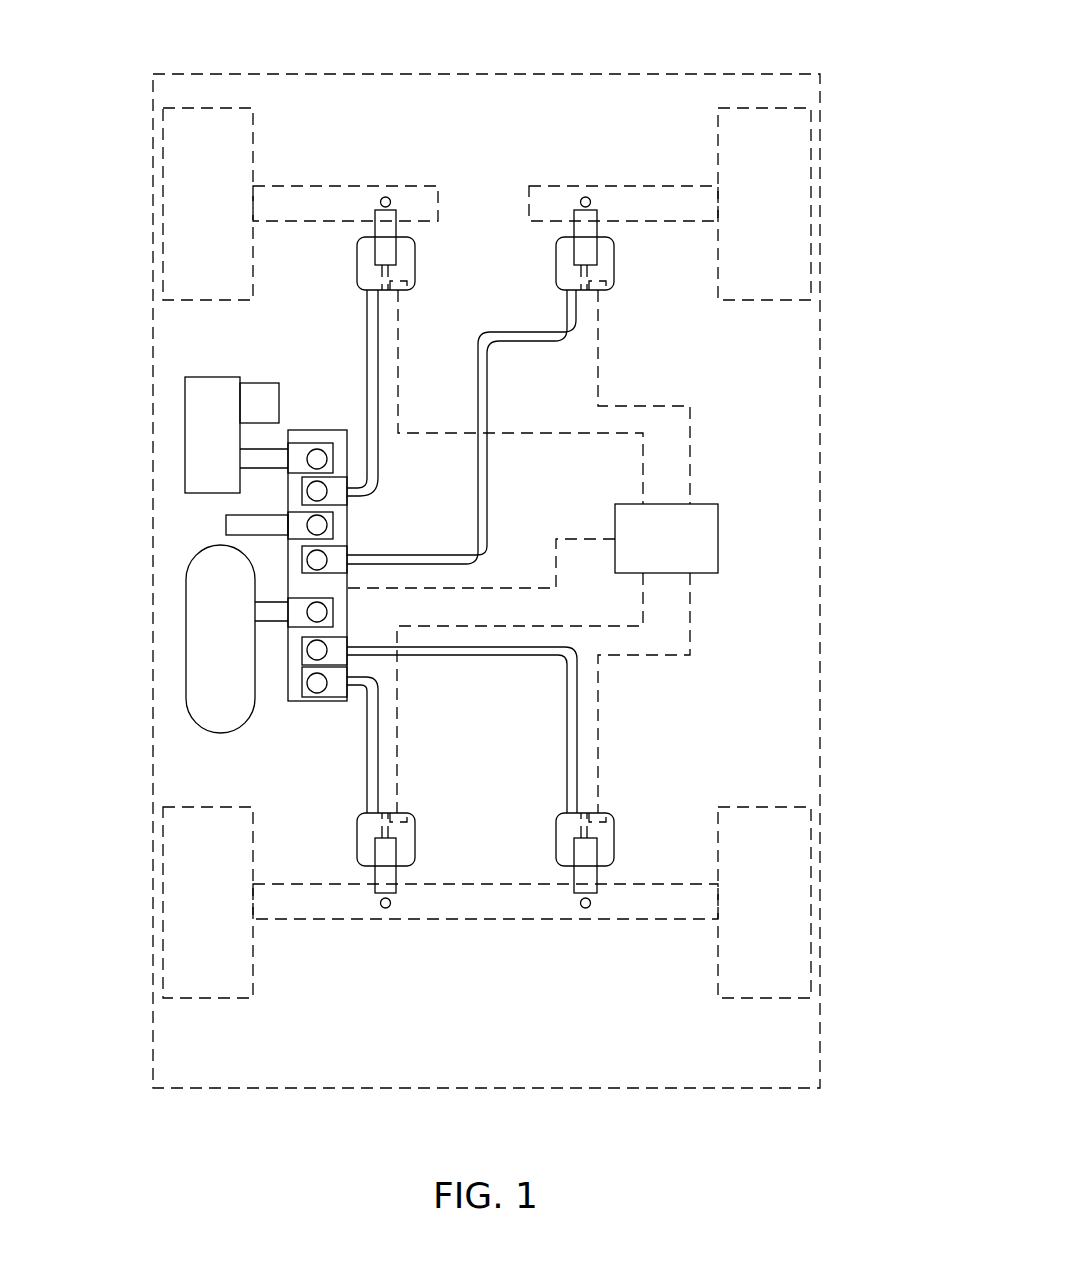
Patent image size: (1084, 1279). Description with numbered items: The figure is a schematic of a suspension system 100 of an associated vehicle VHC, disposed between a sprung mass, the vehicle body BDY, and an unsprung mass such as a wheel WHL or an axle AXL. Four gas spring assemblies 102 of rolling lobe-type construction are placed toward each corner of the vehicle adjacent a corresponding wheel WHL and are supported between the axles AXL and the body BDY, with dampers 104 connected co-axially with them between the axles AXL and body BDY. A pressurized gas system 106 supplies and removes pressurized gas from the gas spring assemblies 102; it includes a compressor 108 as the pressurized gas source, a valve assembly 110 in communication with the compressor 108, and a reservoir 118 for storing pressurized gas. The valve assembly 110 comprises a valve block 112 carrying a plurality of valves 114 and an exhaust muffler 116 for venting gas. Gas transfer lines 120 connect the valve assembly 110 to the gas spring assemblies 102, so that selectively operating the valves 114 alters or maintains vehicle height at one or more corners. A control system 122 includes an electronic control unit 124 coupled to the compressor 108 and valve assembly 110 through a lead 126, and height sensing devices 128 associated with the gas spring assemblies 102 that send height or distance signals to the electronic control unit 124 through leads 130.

The suspension system 100 is at (800, 375).
The gas spring assemblies 102 is at (418, 272).
The dampers 104 is at (375, 230).
The pressurized gas system 106 is at (255, 546).
The compressor 108 is at (193, 430).
The valve assembly 110 is at (344, 546).
The valve block 112 is at (305, 702).
The valves 114 is at (332, 548).
The muffler 116 is at (226, 523).
The reservoir 118 is at (200, 643).
The gas transfer lines 120 is at (367, 332).
The control system 122 is at (566, 503).
The electronic control unit 124 is at (666, 538).
The lead 126 is at (583, 537).
The height sensing devices 128 is at (405, 292).
The leads 130 is at (400, 392).
The vehicle body BDY is at (712, 73).
The vehicle VHC is at (898, 93).
The wheel WHL is at (182, 180).
The axle AXL is at (290, 197).